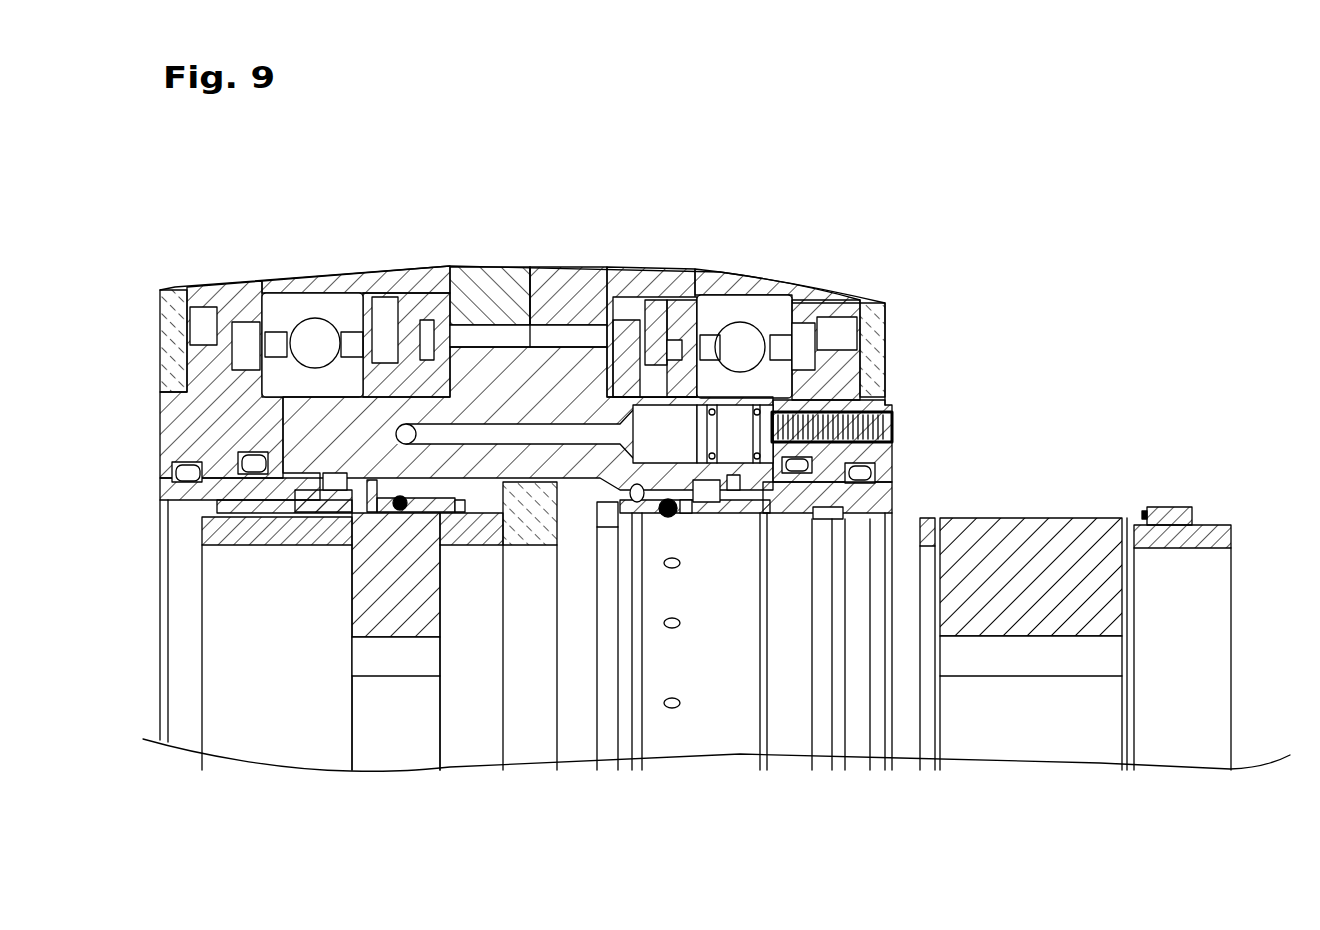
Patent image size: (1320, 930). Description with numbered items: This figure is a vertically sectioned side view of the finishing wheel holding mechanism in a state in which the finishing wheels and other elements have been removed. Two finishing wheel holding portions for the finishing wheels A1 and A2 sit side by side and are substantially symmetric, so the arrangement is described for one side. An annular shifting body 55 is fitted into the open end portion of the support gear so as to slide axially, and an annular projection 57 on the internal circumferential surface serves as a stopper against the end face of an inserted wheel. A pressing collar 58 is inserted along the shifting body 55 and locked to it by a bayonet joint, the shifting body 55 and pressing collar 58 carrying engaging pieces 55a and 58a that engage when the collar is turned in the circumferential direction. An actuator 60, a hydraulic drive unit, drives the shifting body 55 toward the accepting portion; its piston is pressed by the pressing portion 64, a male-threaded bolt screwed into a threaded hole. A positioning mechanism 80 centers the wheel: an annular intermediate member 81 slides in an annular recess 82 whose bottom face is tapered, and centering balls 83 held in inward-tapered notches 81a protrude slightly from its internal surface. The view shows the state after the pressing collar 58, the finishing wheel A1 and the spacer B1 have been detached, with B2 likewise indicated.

The actuator 60 is at (657, 435).
The pressing portion 64 is at (893, 385).
The shifting body 55 is at (855, 508).
The engaging piece 55a is at (830, 468).
The projection 57 is at (528, 530).
The pressing collar 58 is at (272, 545).
The engaging piece 58a is at (1170, 507).
The finishing wheel A1 is at (1052, 522).
The finishing wheel A2 is at (390, 665).
The spacer B1 is at (925, 520).
The chamber B2 is at (478, 545).
The positioning mechanism 80 is at (716, 699).
The intermediate member 81 is at (745, 505).
The notches 81a is at (680, 512).
The annular recess 82 is at (637, 520).
The centering balls 83 is at (660, 512).